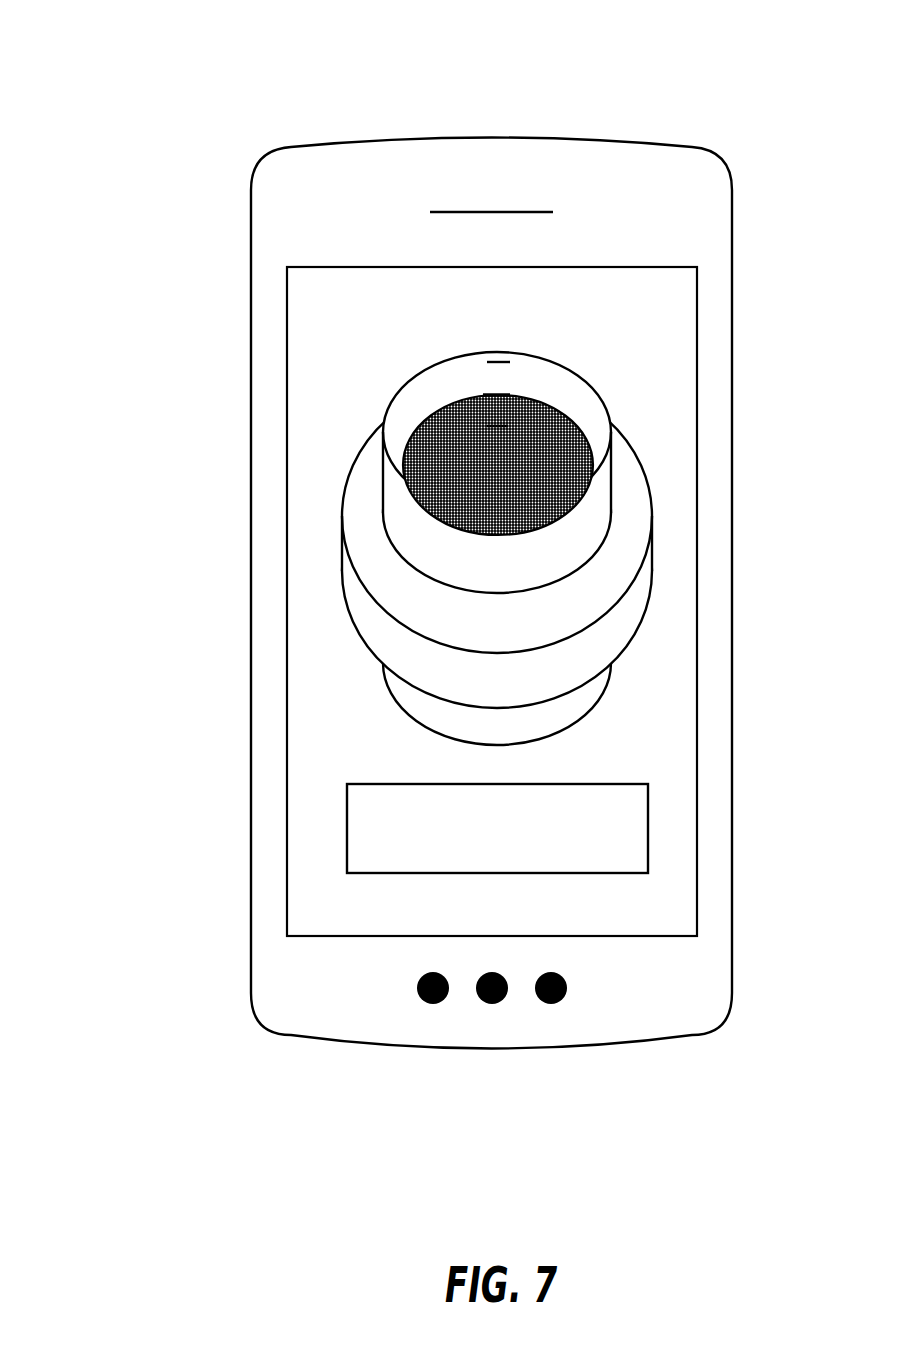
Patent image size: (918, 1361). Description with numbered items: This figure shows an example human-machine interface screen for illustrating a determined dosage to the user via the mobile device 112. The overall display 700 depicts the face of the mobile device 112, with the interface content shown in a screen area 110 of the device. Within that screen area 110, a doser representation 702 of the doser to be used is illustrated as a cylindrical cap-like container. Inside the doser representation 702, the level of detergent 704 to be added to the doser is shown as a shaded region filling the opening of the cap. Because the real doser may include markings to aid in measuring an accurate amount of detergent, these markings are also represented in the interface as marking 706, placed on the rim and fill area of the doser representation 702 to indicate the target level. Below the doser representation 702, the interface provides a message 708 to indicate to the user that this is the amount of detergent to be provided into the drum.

The user interface display 700 is at (150, 38).
The display screen 110 is at (287, 327).
The mobile device 112 is at (732, 903).
The doser representation 702 is at (342, 543).
The level of detergent 704 is at (548, 470).
The marking 706 is at (468, 355).
The message 708 is at (347, 832).